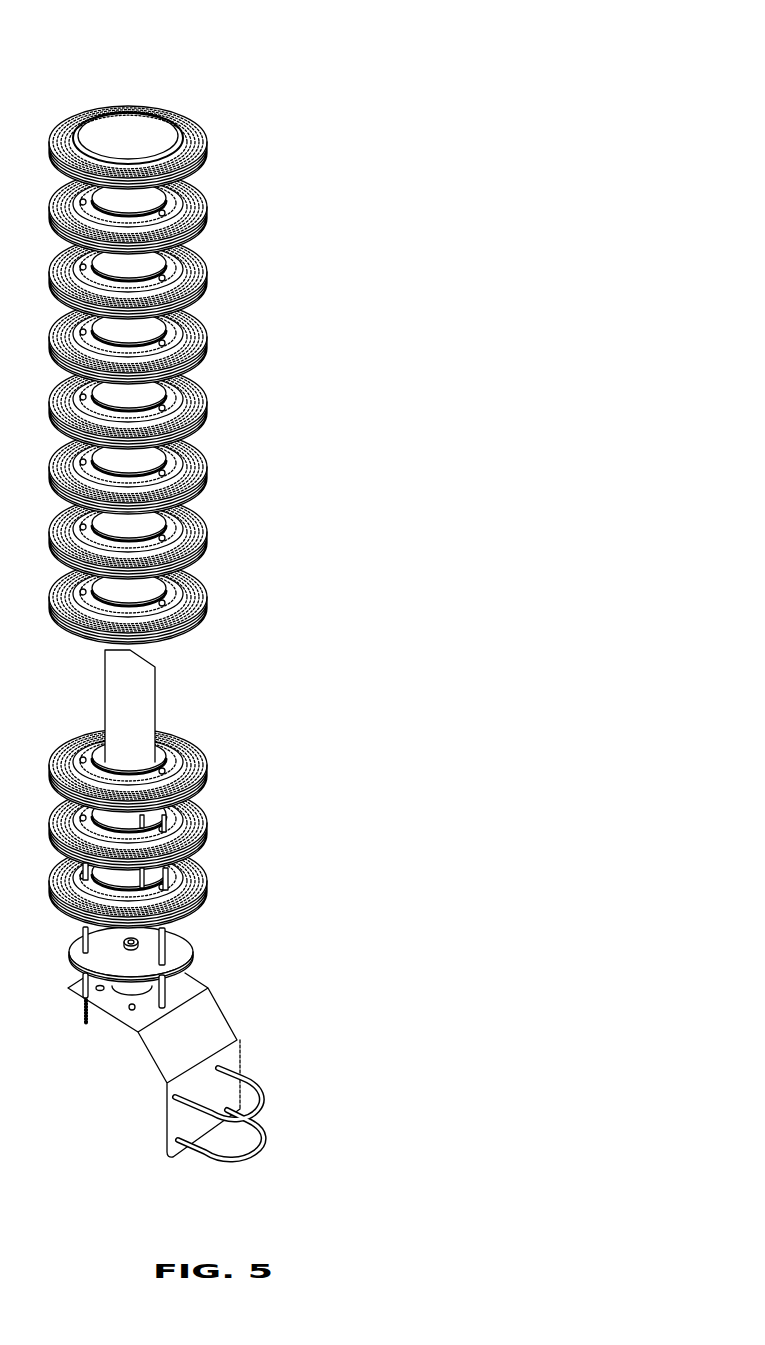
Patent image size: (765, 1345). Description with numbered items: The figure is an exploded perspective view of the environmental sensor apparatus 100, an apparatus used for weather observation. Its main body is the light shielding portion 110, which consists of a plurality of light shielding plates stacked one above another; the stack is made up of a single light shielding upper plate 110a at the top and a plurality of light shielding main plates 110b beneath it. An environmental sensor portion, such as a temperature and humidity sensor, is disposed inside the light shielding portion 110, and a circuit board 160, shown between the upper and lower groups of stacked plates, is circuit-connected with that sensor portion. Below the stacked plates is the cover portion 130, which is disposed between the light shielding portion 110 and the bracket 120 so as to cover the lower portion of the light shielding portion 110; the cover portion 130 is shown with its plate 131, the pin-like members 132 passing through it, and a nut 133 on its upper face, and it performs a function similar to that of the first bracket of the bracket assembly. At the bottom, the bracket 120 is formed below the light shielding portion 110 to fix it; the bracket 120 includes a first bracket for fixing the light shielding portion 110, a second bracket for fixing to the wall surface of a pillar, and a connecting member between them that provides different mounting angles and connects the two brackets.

The environmental sensor apparatus 100 is at (152, 32).
The light shielding portion 110 is at (269, 517).
The light shielding upper plate 110a is at (207, 142).
The light shielding main plate 110b is at (205, 209).
The circuit board 160 is at (155, 703).
The cover portion 130 is at (240, 967).
The fixing plate 131 is at (190, 970).
The fixing pin 132 is at (170, 990).
The nut 133 is at (142, 940).
The bracket 120 is at (227, 1017).